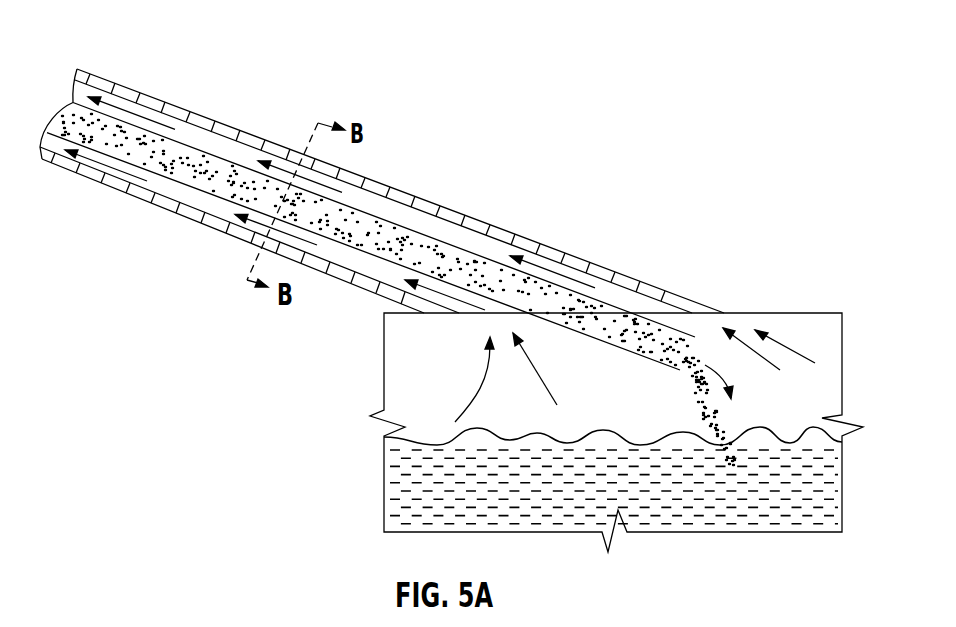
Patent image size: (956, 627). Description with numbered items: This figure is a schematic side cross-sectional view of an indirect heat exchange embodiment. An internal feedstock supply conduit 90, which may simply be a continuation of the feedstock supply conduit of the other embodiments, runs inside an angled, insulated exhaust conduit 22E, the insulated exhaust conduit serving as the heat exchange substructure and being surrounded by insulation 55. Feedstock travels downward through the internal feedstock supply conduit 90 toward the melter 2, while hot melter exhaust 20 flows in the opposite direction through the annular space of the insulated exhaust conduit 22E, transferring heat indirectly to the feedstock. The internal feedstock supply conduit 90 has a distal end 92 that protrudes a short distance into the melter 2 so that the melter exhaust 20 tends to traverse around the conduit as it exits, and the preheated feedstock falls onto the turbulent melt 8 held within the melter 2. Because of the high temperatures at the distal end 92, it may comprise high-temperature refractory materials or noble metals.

The melter 2 is at (805, 312).
The turbulent melt 8 is at (395, 480).
The melter exhaust 20 is at (480, 387).
The angled, insulated exhaust conduit 22E is at (193, 118).
The insulation 55 is at (403, 192).
The internal feedstock supply conduit 90 is at (82, 76).
The distal end 92 is at (677, 327).